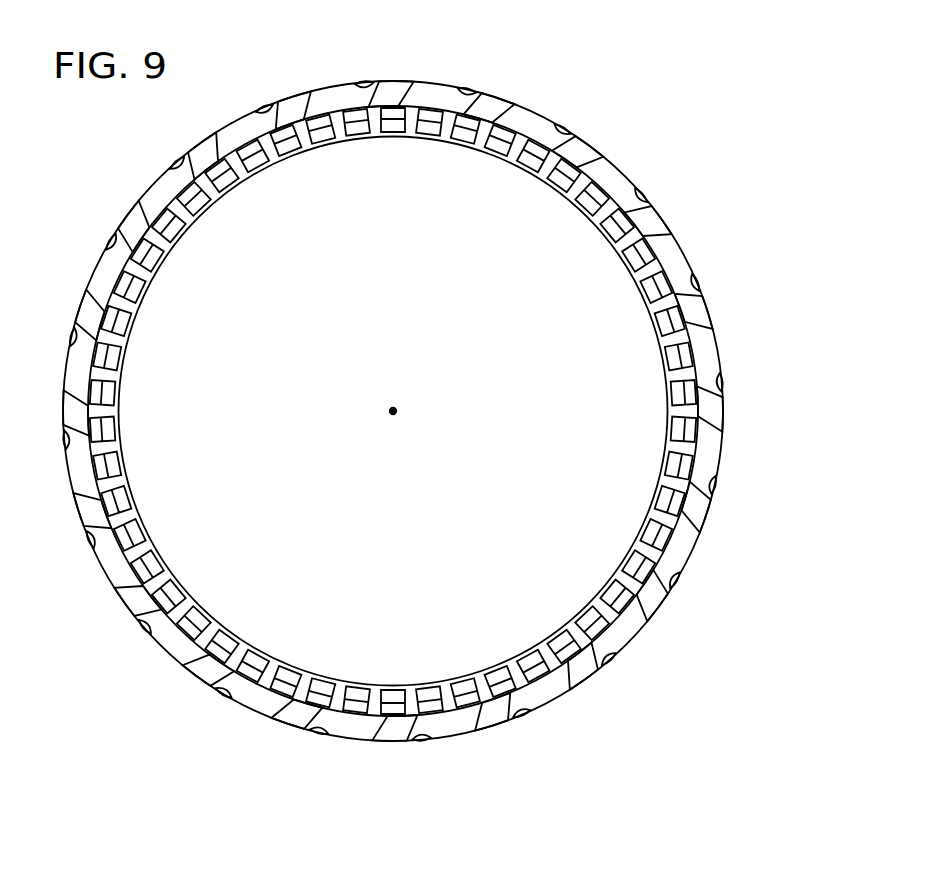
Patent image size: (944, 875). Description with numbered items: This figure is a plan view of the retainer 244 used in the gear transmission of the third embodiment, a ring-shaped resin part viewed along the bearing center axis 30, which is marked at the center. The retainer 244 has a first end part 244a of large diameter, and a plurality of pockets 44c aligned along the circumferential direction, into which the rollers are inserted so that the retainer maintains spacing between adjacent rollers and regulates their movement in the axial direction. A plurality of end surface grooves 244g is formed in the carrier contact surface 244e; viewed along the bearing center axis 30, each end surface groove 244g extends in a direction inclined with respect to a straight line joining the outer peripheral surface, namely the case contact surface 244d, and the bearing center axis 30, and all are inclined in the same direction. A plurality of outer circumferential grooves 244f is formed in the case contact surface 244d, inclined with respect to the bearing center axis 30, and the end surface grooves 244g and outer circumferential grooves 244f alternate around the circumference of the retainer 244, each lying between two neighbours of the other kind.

The retainer 244 is at (624, 62).
The first end part 244a is at (787, 274).
The case contact surface 244d is at (686, 262).
The carrier contact surface 244e is at (704, 348).
The outer circumferential grooves 244f is at (710, 492).
The end surface grooves 244g is at (695, 520).
The pockets 44c is at (600, 203).
The bearing center axis 30 is at (393, 411).